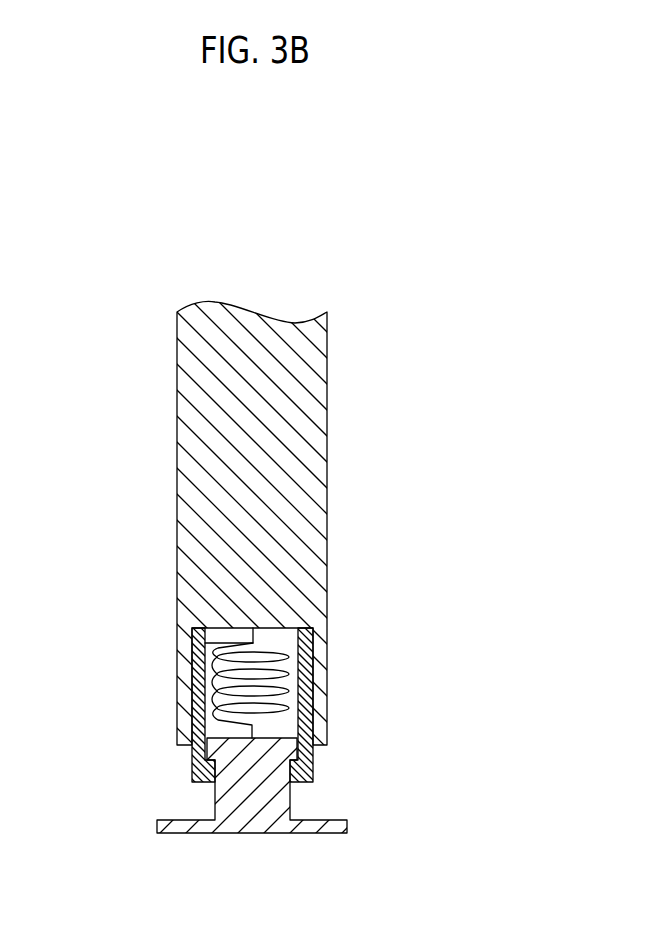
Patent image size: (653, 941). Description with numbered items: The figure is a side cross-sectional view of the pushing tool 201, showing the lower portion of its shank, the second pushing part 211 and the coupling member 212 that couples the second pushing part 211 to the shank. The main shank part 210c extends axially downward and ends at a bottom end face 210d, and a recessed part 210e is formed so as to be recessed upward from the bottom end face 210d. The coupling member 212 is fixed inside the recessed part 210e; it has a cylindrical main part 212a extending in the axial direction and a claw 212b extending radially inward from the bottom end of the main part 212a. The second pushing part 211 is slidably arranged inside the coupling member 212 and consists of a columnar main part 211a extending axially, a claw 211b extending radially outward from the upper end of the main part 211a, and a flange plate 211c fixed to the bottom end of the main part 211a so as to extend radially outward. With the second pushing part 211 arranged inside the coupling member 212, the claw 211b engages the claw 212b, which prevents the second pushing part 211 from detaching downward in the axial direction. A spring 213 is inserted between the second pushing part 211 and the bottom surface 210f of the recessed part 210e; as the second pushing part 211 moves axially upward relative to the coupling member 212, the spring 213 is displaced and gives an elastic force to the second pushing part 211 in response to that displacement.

The pushing tool 201 is at (343, 142).
The main shank part 210c is at (317, 490).
The bottom end face 210d is at (187, 750).
The recessed part 210e is at (300, 624).
The bottom surface of the recessed part 210f is at (218, 648).
The second pushing part 211 is at (181, 727).
The main part 211a is at (233, 795).
The claw 211b is at (212, 753).
The flange plate 211c is at (167, 829).
The coupling member 212 is at (331, 711).
The main part 212a is at (305, 702).
The claw 212b is at (310, 772).
The spring 213 is at (216, 671).